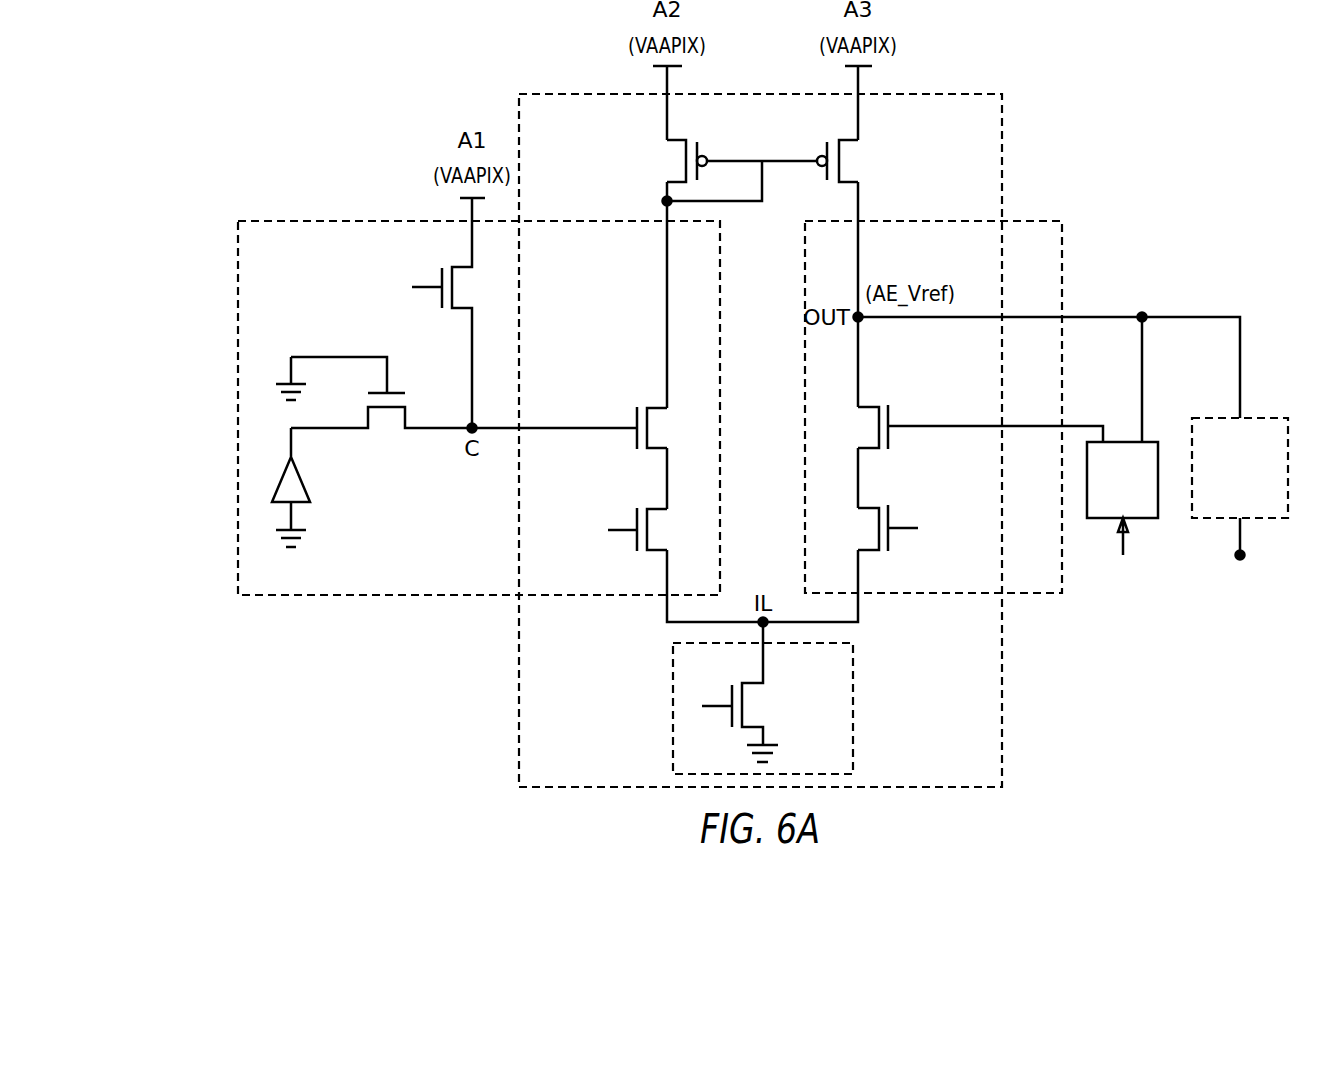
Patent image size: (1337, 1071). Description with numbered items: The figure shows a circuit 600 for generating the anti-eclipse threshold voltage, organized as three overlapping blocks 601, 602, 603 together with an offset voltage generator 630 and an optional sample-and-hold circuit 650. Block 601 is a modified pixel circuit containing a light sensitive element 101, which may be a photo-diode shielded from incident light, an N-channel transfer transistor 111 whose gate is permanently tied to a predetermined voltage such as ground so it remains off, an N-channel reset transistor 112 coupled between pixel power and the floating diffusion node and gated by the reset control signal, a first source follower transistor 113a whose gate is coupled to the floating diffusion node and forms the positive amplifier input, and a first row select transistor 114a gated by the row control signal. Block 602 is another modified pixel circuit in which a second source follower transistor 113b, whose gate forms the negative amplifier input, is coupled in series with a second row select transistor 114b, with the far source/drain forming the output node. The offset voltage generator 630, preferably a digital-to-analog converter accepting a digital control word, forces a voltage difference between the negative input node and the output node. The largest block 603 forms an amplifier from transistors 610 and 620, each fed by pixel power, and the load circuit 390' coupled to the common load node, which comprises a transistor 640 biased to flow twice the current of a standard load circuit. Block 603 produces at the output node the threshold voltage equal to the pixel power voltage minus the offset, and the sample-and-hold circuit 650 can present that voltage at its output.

The circuit 600 is at (397, 93).
The block 601 is at (345, 221).
The block 602 is at (1038, 221).
The block 603 is at (801, 94).
The transistor 610 is at (683, 140).
The transistor 620 is at (843, 140).
The light sensitive element 101 is at (290, 487).
The transfer transistor 111 is at (368, 418).
The reset transistor 112 is at (465, 267).
The first source follower transistor 113a is at (657, 407).
The second source follower transistor 113b is at (868, 407).
The first row select transistor 114a is at (657, 509).
The second row select transistor 114b is at (868, 508).
The offset voltage generator 630 is at (1104, 503).
The transistor 640 is at (752, 683).
The sample-and-hold circuit 650 is at (1221, 481).
The load circuit 390' is at (763, 698).